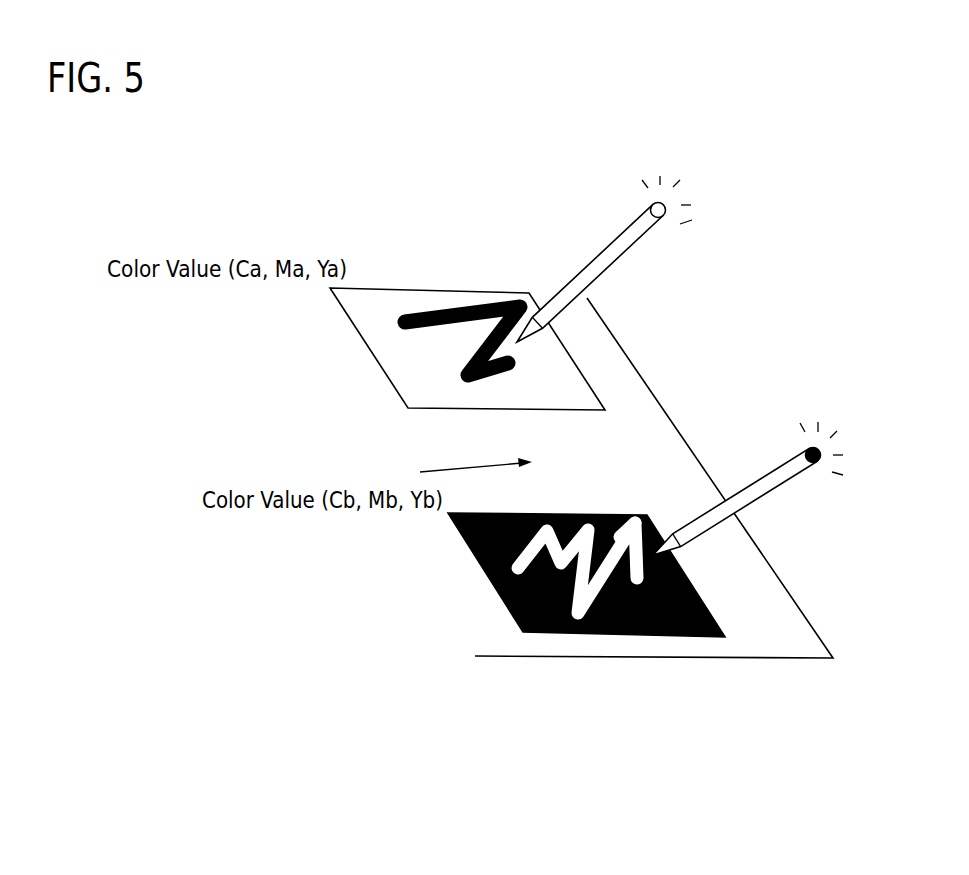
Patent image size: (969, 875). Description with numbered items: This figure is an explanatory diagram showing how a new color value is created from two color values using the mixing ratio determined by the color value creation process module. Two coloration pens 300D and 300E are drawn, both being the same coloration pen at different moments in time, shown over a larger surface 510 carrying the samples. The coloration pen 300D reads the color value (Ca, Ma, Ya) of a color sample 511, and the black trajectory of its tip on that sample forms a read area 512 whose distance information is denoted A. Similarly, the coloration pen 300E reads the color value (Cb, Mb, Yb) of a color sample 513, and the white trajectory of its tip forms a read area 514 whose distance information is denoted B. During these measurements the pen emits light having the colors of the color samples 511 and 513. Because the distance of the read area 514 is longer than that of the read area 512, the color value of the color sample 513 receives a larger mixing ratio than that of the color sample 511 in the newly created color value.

The coloration pen 300D is at (608, 238).
The coloration pen 300E is at (773, 462).
The display screen / drawing sheet 510 is at (712, 658).
The color sample 511 is at (467, 289).
The read area 512 is at (462, 377).
The color sample 513 is at (498, 592).
The read area 514 is at (637, 515).